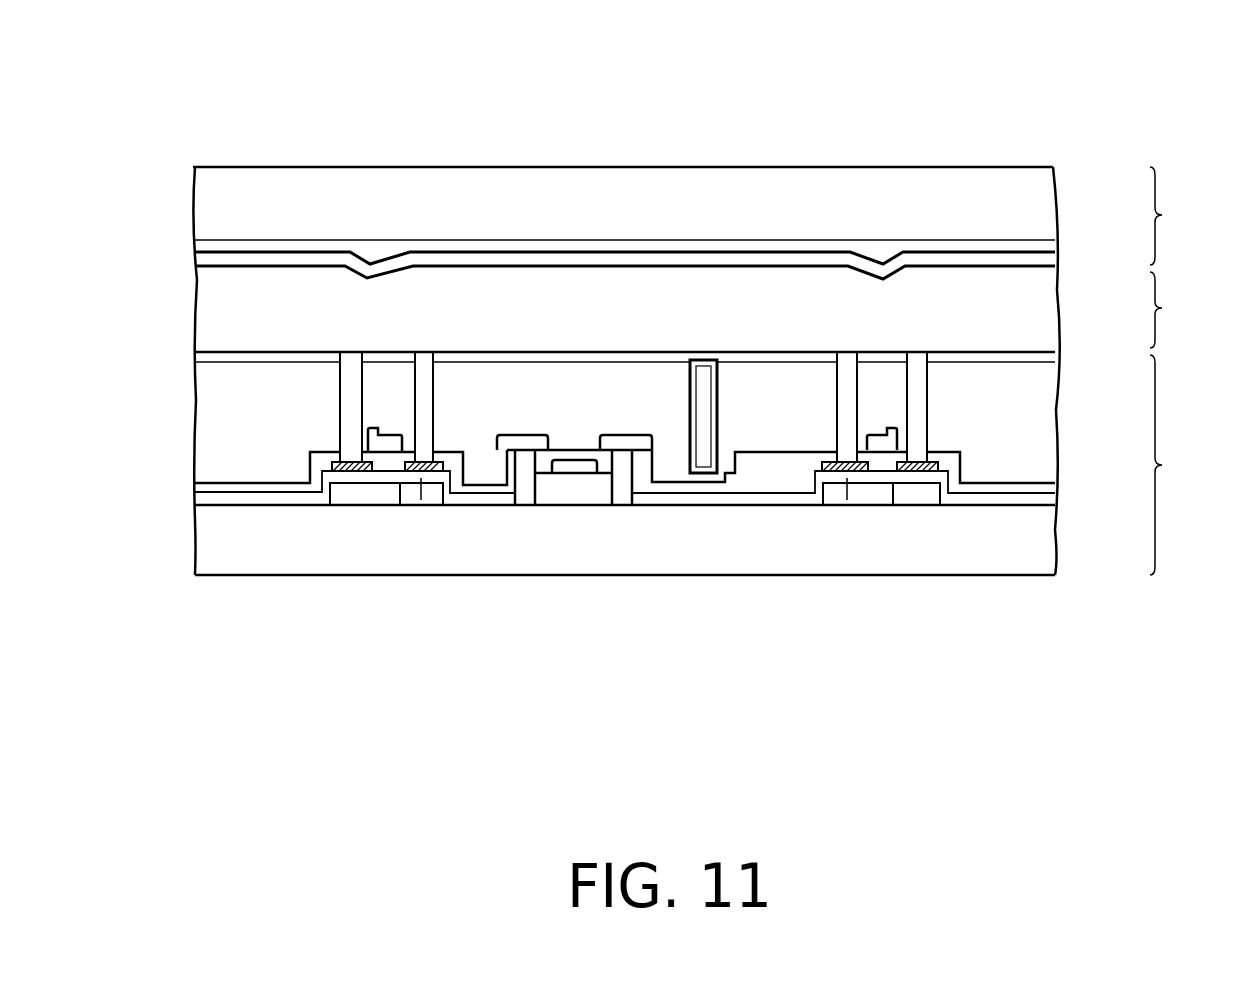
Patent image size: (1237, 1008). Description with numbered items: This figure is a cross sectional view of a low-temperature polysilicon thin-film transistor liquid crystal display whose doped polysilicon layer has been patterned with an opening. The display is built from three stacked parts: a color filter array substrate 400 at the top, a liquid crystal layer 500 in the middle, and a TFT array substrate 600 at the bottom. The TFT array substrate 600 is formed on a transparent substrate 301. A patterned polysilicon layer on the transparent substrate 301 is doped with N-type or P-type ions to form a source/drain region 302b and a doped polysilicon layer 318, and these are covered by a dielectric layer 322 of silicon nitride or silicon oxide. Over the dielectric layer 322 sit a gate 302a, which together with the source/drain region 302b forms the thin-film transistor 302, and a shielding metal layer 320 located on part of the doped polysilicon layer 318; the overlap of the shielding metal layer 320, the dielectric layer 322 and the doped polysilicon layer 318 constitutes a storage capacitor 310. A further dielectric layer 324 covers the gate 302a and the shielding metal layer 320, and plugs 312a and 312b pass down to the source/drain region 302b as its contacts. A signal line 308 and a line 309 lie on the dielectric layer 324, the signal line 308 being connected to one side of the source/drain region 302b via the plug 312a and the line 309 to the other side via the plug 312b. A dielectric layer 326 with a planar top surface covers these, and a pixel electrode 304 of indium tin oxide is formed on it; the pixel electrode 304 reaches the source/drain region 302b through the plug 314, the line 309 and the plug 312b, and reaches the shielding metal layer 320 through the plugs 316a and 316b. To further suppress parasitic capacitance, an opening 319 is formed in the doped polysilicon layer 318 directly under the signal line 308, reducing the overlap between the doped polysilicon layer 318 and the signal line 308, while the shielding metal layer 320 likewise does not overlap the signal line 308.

The transparent substrate 301 is at (1043, 553).
The thin-film transistor 302 is at (693, 95).
The gate 302a is at (560, 488).
The source/drain region 302b is at (523, 492).
The pixel electrode 304 is at (806, 352).
The signal line 308 is at (372, 434).
The line 309 is at (660, 442).
The storage capacitor 310 is at (427, 488).
The plug 312a is at (539, 495).
The plug 312b is at (612, 497).
The plug 314 is at (705, 377).
The plug 316a is at (420, 375).
The plug 316b is at (915, 373).
The doped polysilicon layer 318 is at (363, 492).
The opening 319 is at (388, 498).
The shielding metal layer 320 is at (312, 456).
The dielectric layer 322 is at (1052, 495).
The dielectric layer 324 is at (1045, 483).
The dielectric layer 326 is at (1050, 385).
The color filter array substrate 400 is at (1191, 216).
The liquid crystal layer 500 is at (1191, 310).
The TFT array substrate 600 is at (1191, 465).